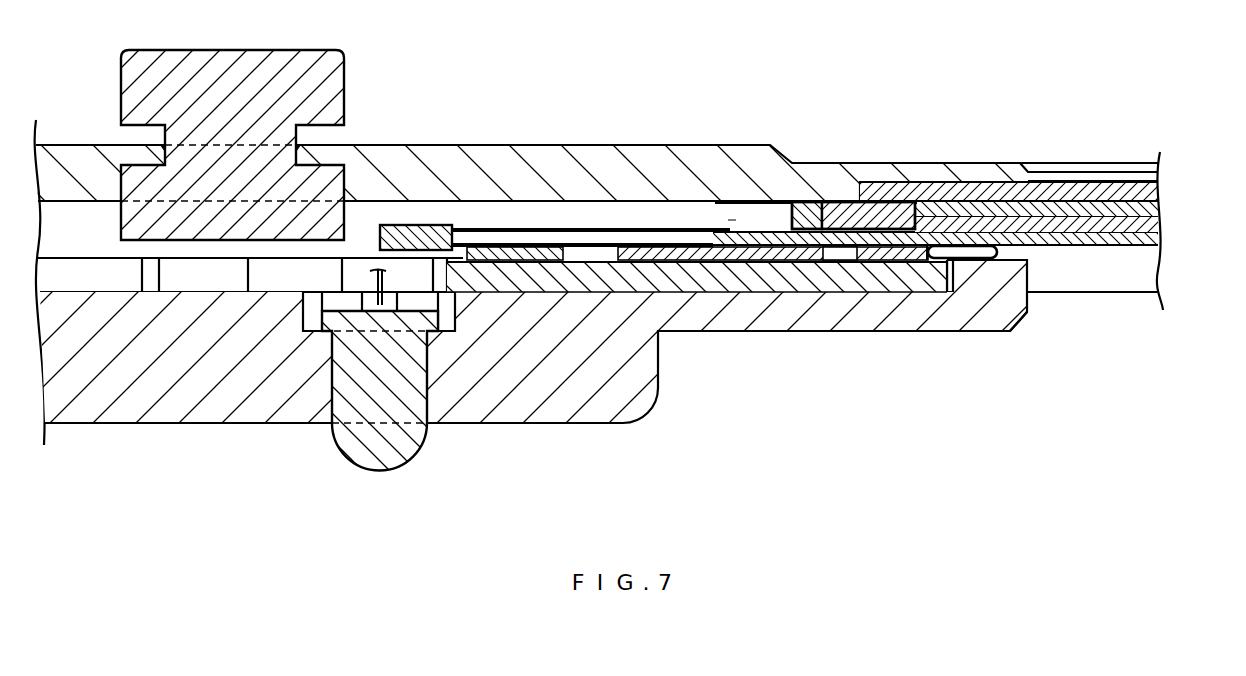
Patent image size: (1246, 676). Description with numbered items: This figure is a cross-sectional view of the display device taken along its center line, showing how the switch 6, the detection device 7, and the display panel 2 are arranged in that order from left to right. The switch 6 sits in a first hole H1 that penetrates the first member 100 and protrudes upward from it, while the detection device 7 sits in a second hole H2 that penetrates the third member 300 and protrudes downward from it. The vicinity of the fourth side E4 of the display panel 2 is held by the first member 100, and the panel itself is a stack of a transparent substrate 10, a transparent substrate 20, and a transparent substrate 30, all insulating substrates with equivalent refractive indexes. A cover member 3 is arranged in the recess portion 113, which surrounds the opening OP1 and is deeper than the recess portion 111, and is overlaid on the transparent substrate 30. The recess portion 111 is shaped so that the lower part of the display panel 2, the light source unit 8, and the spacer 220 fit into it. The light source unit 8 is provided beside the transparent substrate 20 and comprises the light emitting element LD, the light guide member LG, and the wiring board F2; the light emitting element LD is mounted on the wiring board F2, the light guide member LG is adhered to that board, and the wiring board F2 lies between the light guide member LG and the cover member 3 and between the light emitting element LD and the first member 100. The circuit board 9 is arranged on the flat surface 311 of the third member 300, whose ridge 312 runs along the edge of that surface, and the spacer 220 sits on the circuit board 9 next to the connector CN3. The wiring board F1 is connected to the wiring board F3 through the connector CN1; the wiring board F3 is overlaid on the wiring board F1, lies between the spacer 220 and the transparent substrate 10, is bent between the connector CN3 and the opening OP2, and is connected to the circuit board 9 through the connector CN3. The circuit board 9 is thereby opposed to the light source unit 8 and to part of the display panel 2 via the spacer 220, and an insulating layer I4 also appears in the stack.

The switch 6 is at (263, 50).
The first hole H1 is at (193, 140).
The first member 100 is at (757, 147).
The connector CN1 is at (410, 225).
The wiring board F1 is at (520, 228).
The wiring board F3 is at (596, 243).
The recess portion 111 is at (651, 208).
The wiring board F2 is at (740, 200).
The light source unit 8 is at (833, 195).
The light emitting element LD is at (810, 208).
The light guide member LG is at (846, 210).
The fourth side E4 is at (732, 220).
The recess portion 113 is at (984, 190).
The opening OP1 is at (1112, 168).
The cover member 3 is at (1155, 192).
The transparent substrate 30 is at (1152, 210).
The transparent substrate 20 is at (1152, 223).
The transparent substrate 10 is at (1152, 237).
The display panel 2 is at (1130, 252).
The ridge 312 is at (1022, 278).
The opening OP2 is at (1103, 287).
The third member 300 is at (617, 425).
The detection device 7 is at (380, 468).
The second hole H2 is at (352, 440).
The flat surface 311 is at (748, 288).
The circuit board 9 is at (710, 283).
The insulating layer I4 is at (522, 262).
The spacer 220 is at (805, 257).
The connector CN3 is at (873, 252).